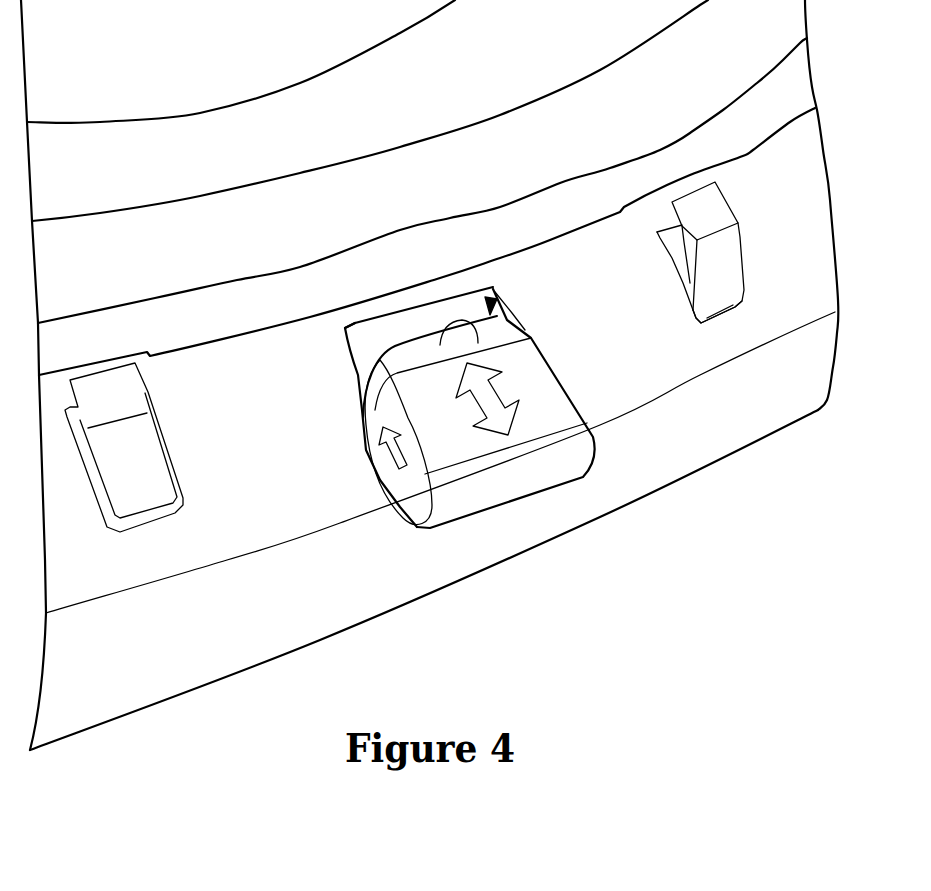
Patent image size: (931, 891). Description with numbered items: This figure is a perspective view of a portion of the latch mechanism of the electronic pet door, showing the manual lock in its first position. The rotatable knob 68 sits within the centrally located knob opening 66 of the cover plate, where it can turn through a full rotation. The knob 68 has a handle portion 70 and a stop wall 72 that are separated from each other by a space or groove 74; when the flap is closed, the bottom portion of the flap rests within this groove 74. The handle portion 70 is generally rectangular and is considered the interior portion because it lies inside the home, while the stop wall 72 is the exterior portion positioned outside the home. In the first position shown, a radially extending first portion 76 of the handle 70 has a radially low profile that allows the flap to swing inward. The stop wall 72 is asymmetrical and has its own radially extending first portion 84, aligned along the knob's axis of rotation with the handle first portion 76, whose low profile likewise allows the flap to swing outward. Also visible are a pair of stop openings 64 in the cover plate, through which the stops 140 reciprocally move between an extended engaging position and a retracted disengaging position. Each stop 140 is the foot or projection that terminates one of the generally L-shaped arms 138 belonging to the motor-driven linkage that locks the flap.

The stop opening 64 is at (706, 322).
The knob opening 66 is at (510, 313).
The rotatable knob 68 is at (560, 460).
The handle portion 70 is at (438, 508).
The stop wall 72 is at (477, 293).
The groove 74 is at (497, 283).
The first portion of the handle 76 is at (397, 362).
The first portion of the stop wall 84 is at (428, 308).
The L-shaped arm 138 is at (720, 312).
The stop 140 is at (718, 260).